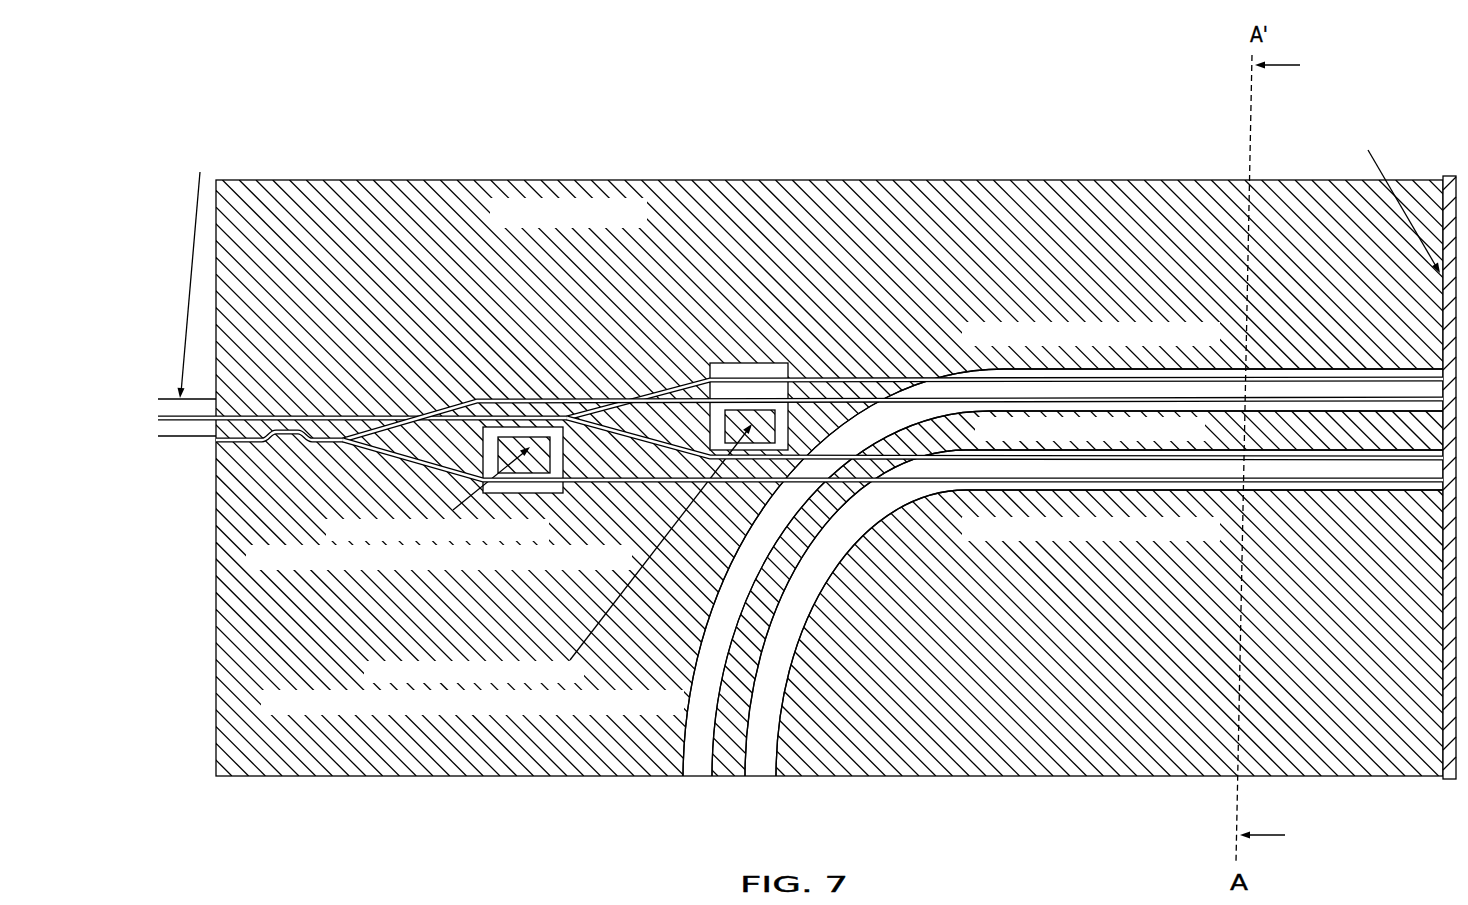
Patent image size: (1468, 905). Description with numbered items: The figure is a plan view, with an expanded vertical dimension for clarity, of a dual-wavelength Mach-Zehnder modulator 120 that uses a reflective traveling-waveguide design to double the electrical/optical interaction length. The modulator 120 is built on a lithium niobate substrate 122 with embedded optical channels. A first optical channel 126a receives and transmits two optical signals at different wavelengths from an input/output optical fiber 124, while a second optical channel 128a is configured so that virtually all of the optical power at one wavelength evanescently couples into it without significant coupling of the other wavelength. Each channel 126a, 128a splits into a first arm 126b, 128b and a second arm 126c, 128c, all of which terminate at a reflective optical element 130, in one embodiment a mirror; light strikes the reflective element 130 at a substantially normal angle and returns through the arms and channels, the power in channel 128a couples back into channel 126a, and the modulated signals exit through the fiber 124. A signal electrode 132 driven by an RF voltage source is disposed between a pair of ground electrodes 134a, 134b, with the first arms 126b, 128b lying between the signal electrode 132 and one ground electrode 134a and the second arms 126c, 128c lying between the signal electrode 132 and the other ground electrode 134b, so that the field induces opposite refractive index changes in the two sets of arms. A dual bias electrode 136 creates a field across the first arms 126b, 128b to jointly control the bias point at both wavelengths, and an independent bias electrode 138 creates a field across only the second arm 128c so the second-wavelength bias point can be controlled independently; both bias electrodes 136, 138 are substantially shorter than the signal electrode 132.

The dual-wavelength Mach-Zehnder modulator 120 is at (1052, 150).
The lithium niobate substrate 122 is at (697, 772).
The input/output optical fiber 124 is at (174, 421).
The first optical channel 126a is at (266, 415).
The first arm of the first optical channel 126b is at (672, 380).
The second arm of the first optical channel 126c is at (637, 406).
The second optical channel 128a is at (323, 443).
The first arm of the second optical channel 128b is at (441, 398).
The second arm of the second optical channel 128c is at (393, 458).
The reflective optical element 130 is at (1428, 771).
The signal electrode 132 is at (722, 778).
The ground electrode 134a is at (465, 765).
The ground electrode 134b is at (892, 763).
The dual bias electrode 136 is at (776, 418).
The independent bias electrode 138 is at (555, 456).